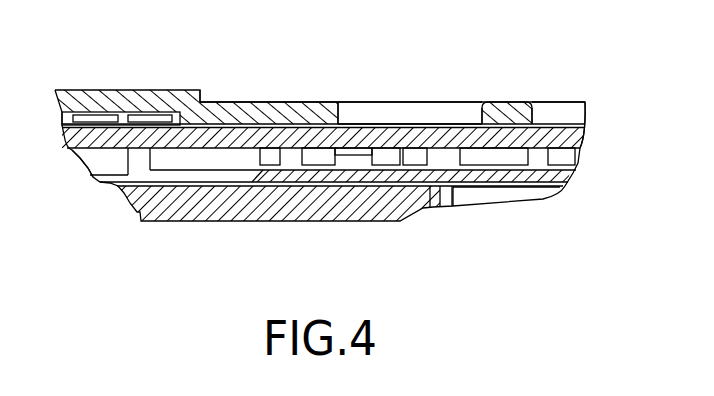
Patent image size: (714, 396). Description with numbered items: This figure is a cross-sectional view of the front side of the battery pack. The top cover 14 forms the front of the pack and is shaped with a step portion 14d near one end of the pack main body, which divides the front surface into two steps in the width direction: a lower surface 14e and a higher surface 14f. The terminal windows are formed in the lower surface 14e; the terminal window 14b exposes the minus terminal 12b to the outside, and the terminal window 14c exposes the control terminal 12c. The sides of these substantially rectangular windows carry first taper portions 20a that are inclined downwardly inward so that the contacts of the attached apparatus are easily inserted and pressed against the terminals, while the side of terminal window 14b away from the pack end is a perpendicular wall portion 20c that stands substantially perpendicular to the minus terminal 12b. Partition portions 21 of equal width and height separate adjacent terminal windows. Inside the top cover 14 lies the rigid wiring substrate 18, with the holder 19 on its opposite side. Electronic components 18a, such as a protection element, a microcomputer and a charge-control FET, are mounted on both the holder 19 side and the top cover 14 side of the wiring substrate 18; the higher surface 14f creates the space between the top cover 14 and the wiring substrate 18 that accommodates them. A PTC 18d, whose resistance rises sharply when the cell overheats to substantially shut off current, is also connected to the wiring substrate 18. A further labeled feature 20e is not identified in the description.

The minus terminal 12b is at (417, 120).
The control terminal 12c is at (584, 100).
The top cover 14 is at (145, 77).
The terminal window 14b is at (370, 112).
The terminal window 14c is at (546, 108).
The step portion 14d is at (205, 100).
The lower surface 14e is at (265, 101).
The higher surface 14f is at (103, 90).
The wiring substrate 18 is at (60, 142).
The electronic components 18a is at (88, 163).
The PTC 18d is at (358, 204).
The holder 19 is at (503, 191).
The first taper portions 20a is at (532, 99).
The perpendicular wall portion 20c is at (346, 101).
The adhesive layer 20e is at (480, 102).
The partition portions 21 is at (505, 102).